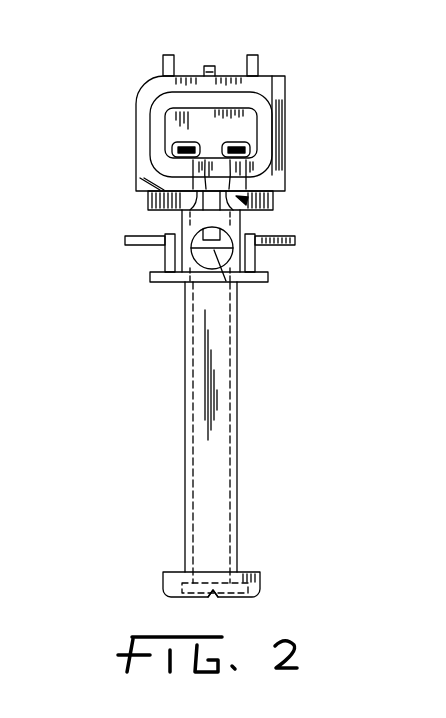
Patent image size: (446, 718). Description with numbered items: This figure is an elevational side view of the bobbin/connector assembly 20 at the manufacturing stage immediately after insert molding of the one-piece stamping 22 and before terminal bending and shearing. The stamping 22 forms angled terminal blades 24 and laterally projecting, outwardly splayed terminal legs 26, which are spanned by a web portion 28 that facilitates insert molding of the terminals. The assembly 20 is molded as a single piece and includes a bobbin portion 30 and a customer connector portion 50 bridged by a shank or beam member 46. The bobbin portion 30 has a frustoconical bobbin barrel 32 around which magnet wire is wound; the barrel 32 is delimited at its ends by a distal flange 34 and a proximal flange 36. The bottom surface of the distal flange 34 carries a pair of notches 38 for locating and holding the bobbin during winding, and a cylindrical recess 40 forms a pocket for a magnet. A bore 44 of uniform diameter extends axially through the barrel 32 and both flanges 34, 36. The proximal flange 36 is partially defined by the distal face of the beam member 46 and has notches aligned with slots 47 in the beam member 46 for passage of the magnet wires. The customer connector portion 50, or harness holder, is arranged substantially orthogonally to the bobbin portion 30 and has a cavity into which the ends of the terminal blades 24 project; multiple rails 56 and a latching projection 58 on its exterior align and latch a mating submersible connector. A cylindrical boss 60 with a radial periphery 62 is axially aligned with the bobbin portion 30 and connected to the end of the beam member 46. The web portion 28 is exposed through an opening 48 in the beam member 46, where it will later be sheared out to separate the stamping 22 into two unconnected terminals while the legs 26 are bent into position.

The bobbin/connector assembly 20 is at (192, 131).
The one-piece stamping 22 is at (258, 213).
The angled terminal blades 24 is at (180, 142).
The terminal legs 26 is at (127, 245).
The web portion 28 is at (226, 287).
The bobbin portion 30 is at (208, 417).
The bobbin barrel 32 is at (233, 450).
The distal flange 34 is at (260, 582).
The proximal flange 36 is at (268, 283).
The notches 38 is at (213, 598).
The cylindrical recess 40 is at (240, 600).
The bore 44 is at (207, 502).
The beam member 46 is at (182, 223).
The slots 47 is at (165, 258).
The opening 48 is at (209, 260).
The customer connector portion 50 is at (124, 148).
The rails 56 is at (167, 55).
The latching projection 58 is at (211, 66).
The cylindrical boss 60 is at (147, 202).
The radial periphery 62 is at (275, 200).